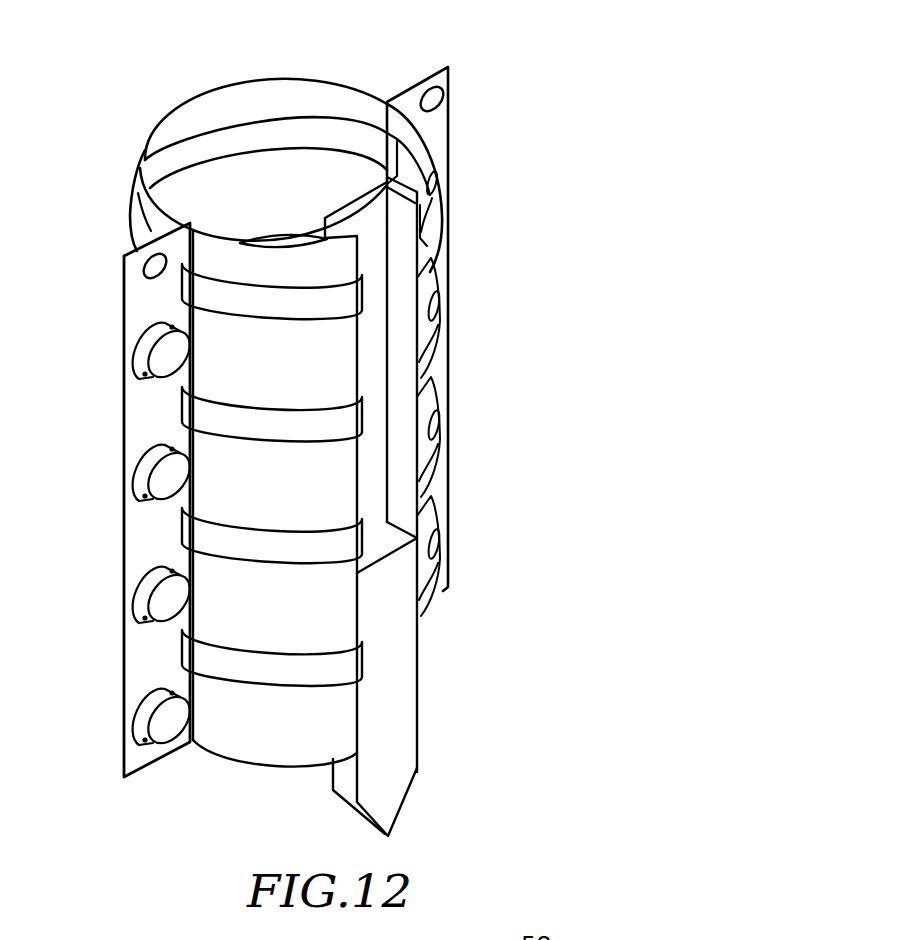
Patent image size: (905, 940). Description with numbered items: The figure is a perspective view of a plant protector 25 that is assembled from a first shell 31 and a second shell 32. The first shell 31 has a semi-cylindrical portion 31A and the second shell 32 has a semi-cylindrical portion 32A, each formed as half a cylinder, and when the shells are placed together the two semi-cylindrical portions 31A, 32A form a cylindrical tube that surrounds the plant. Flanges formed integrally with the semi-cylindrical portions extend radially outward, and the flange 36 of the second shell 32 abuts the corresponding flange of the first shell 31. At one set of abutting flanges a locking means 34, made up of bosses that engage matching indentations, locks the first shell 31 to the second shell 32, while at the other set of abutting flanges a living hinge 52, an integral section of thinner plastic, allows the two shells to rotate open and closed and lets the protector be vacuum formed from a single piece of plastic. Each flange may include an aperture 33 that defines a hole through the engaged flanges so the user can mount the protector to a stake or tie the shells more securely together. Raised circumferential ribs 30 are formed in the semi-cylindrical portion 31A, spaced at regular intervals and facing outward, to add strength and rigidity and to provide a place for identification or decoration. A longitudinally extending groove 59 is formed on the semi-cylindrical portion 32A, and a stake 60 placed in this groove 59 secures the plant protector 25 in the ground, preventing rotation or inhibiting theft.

The plant protector 25 is at (120, 361).
The raised circumferential ribs 30 is at (265, 688).
The first shell 31 is at (210, 90).
The semi-cylindrical portion 31A is at (140, 158).
The second shell 32 is at (433, 660).
The semi-cylindrical portion 32A is at (428, 320).
The aperture 33 is at (146, 271).
The locking means 34 is at (136, 585).
The flange 36 is at (148, 418).
The living hinge 52 is at (447, 66).
The longitudinally extending groove 59 is at (403, 430).
The stake 60 is at (398, 717).